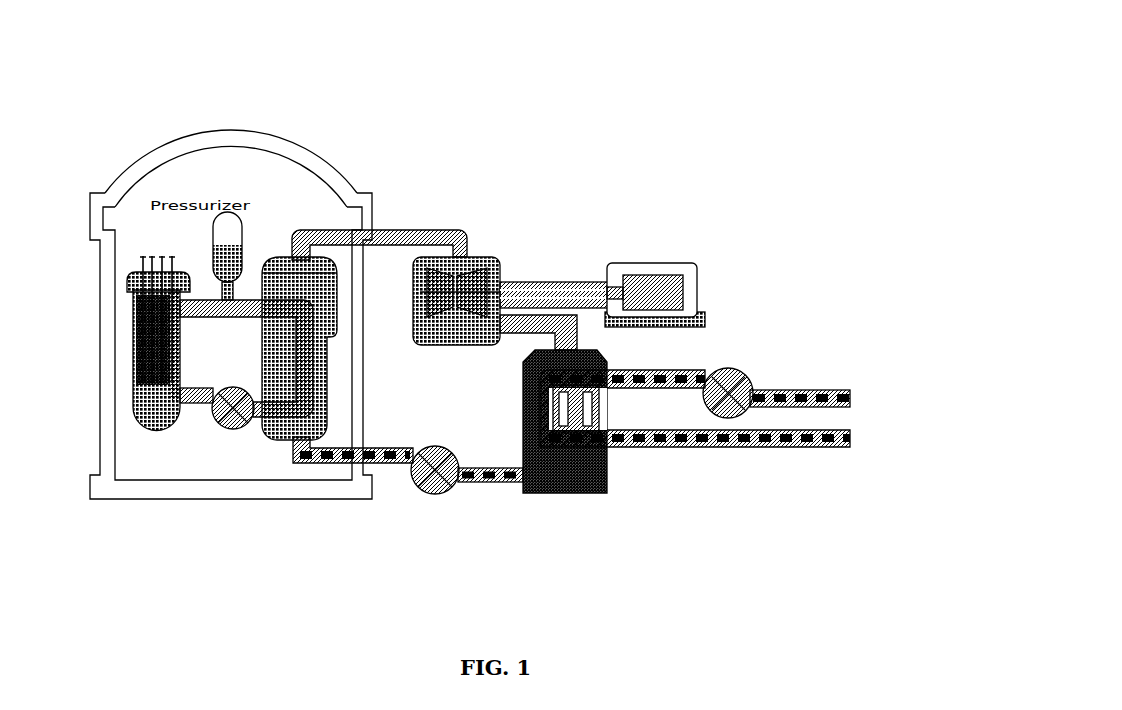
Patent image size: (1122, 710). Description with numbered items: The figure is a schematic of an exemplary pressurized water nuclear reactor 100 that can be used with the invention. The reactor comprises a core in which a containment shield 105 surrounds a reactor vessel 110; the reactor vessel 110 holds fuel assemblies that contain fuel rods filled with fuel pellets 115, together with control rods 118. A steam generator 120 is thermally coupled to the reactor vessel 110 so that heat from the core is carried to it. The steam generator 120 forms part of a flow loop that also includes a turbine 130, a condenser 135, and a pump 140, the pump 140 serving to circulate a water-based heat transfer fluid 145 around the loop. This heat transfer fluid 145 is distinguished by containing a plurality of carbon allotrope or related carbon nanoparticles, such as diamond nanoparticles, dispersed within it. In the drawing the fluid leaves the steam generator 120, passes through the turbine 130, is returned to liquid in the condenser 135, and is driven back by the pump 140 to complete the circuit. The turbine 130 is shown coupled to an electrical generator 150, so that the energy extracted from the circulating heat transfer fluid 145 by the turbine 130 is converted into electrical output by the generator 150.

The pressurized water nuclear reactor 100 is at (277, 593).
The containment shield 105 is at (232, 145).
The reactor vessel 110 is at (137, 420).
The fuel pellets 115 is at (133, 358).
The control rods 118 is at (143, 268).
The steam generator 120 is at (320, 270).
The turbine 130 is at (488, 252).
The condenser 135 is at (598, 493).
The pump 140 is at (425, 497).
The heat transfer fluid 145 is at (383, 448).
The electrical generator 150 is at (700, 272).